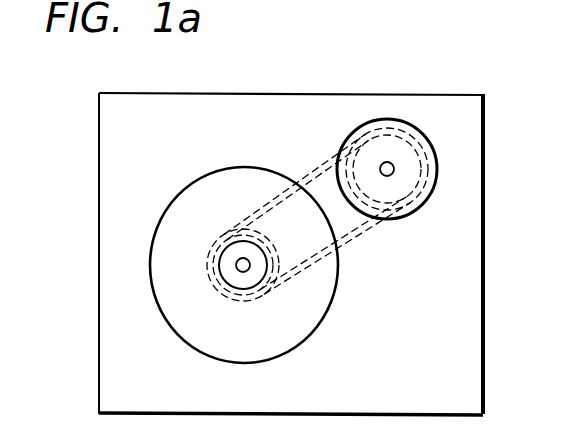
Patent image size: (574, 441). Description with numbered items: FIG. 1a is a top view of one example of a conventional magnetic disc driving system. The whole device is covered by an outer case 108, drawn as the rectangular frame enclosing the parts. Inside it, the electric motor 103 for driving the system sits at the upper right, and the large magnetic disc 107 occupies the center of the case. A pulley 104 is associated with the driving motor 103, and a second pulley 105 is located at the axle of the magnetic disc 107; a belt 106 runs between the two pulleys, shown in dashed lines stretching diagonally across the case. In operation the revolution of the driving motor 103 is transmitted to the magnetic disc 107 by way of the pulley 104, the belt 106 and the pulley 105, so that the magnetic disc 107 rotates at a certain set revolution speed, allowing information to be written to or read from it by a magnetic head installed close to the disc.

The electric motor 103 is at (438, 162).
The pulley 104 is at (430, 193).
The pulley 105 is at (210, 275).
The belt 106 is at (358, 228).
The magnetic disc 107 is at (178, 210).
The outer case 108 is at (483, 104).